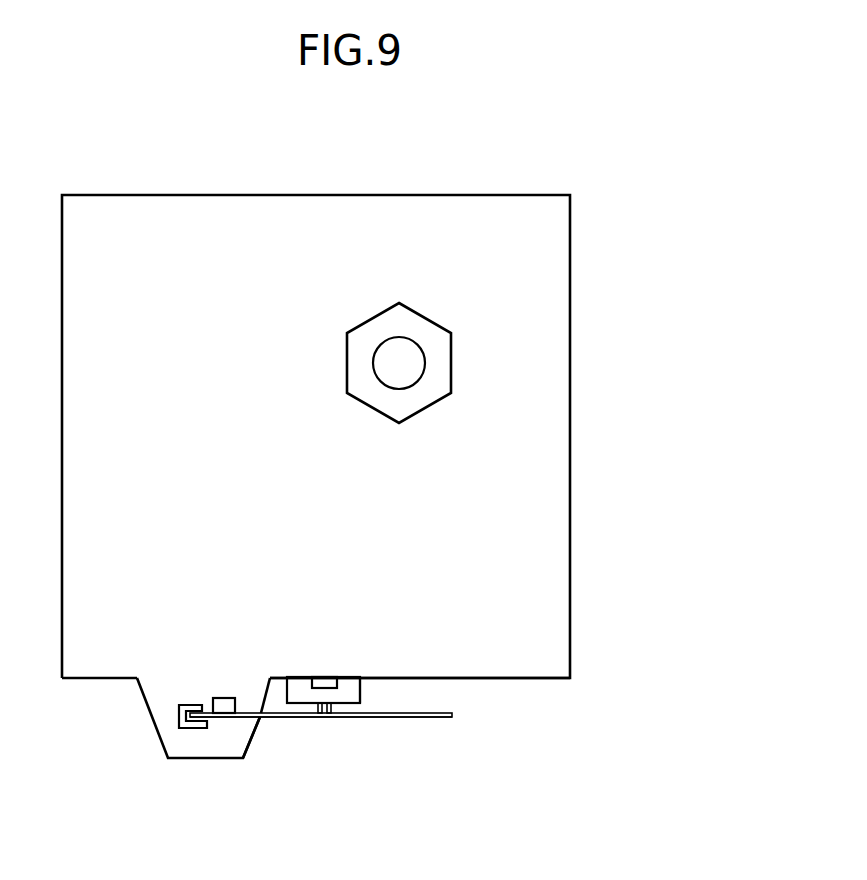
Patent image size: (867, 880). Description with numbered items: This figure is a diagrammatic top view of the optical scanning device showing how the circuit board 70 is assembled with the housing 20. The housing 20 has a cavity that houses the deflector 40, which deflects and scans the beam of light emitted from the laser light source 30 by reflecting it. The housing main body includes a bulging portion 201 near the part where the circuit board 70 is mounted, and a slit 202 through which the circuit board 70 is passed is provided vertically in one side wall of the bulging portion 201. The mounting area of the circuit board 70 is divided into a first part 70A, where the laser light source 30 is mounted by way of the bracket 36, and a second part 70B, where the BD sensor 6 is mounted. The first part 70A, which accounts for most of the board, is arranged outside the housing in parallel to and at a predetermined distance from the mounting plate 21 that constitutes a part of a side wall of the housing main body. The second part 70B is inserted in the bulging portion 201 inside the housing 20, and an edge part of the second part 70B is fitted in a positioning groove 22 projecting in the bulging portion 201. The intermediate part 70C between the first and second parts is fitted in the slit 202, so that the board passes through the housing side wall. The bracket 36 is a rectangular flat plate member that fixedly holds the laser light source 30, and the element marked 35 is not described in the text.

The housing 20 is at (573, 523).
The mounting plate 21 is at (505, 680).
The deflector 40 is at (458, 352).
The bulging portion 201 is at (203, 760).
The slit 202 is at (255, 722).
The intermediate part 70C is at (249, 700).
The circuit board 70 is at (430, 713).
The first part 70A is at (357, 735).
The second part 70B is at (203, 730).
The positioning groove 22 is at (193, 705).
The BD sensor 6 is at (222, 697).
The laser light source 30 is at (322, 678).
The bracket 36 is at (362, 688).
The pins 35 is at (315, 707).